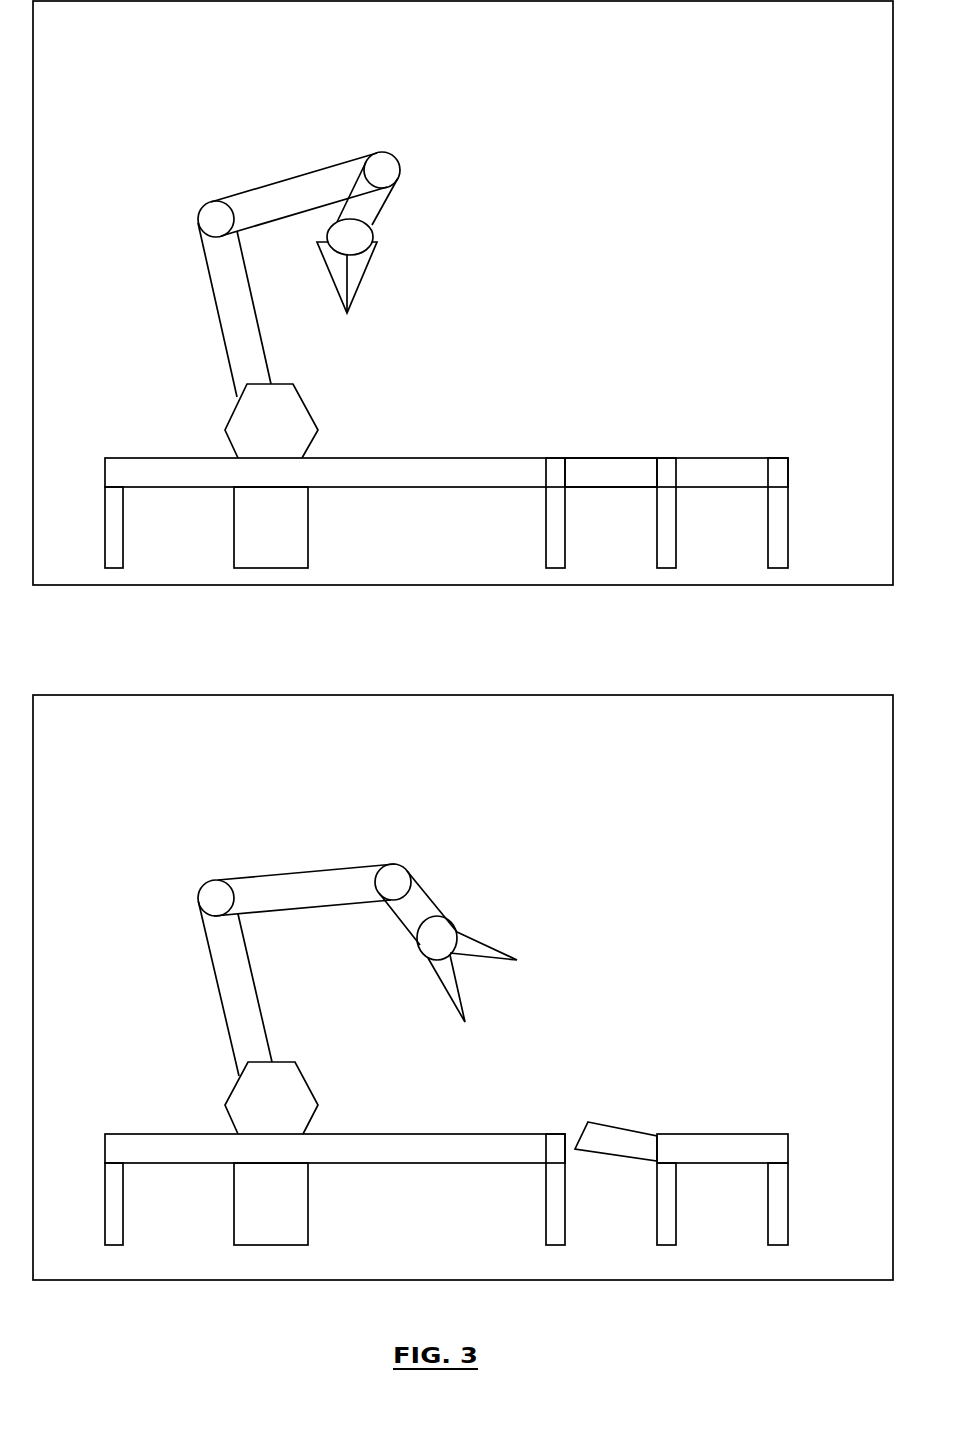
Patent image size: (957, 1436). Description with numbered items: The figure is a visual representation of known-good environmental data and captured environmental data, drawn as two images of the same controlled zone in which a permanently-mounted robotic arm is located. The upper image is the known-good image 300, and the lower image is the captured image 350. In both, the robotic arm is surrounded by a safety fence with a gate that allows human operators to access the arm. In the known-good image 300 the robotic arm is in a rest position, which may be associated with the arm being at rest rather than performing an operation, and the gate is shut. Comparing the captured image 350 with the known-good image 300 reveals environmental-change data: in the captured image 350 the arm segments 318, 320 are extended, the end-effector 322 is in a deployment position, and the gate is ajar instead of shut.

The known-good image 300 is at (463, 293).
The captured image 350 is at (463, 987).
The arm segment 318 is at (310, 868).
The arm segment 320 is at (430, 897).
The end-effector 322 is at (485, 938).